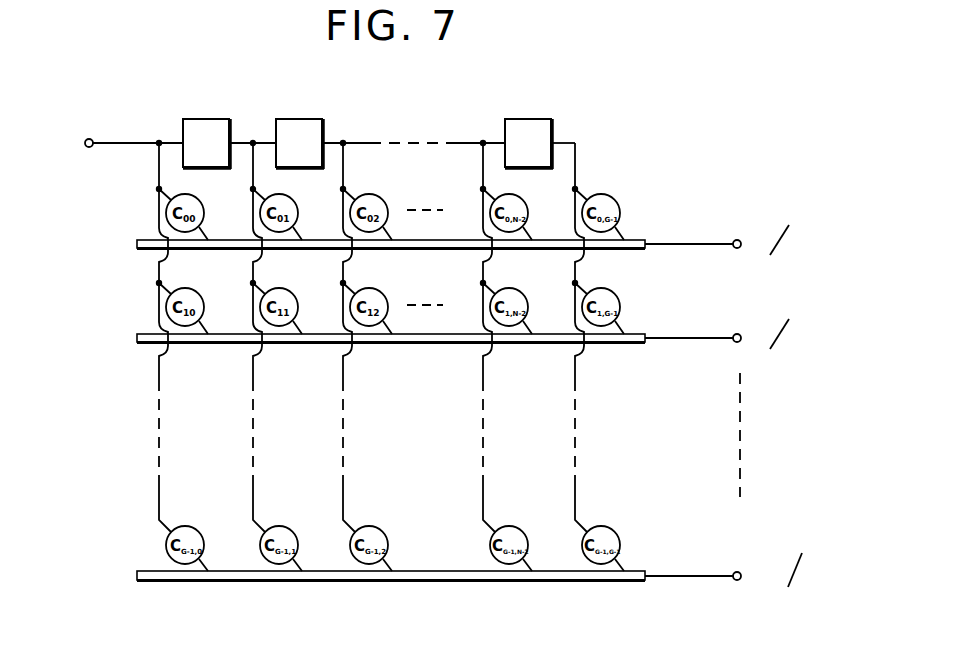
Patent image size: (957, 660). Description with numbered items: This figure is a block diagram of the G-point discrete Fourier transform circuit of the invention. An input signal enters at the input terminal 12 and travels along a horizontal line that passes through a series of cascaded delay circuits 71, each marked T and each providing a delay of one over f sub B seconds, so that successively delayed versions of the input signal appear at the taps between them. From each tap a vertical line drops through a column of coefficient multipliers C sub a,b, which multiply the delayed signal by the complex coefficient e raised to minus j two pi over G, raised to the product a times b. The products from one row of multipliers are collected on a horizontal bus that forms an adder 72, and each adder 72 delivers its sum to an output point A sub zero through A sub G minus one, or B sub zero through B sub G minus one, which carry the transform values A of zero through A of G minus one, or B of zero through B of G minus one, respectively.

The input terminal 12 is at (91, 141).
The delay circuit 71 is at (371, 124).
The adder 72 is at (461, 419).